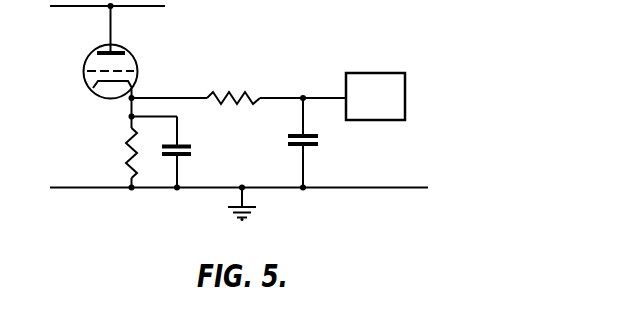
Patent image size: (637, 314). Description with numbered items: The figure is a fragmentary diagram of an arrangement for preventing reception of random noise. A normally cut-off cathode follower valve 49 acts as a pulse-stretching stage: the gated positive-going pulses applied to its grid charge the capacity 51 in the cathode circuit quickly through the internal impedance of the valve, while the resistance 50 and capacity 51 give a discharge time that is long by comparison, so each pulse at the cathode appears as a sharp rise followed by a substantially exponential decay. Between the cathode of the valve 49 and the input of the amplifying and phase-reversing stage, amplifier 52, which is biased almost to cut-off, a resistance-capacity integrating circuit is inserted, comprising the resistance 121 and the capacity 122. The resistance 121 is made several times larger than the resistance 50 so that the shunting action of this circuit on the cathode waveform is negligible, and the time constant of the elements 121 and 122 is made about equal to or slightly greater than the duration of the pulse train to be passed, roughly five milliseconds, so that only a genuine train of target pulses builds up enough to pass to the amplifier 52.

The cathode follower valve 49 is at (129, 53).
The resistance 50 is at (126, 140).
The capacity 51 is at (191, 148).
The resistance 121 is at (257, 94).
The capacity 122 is at (318, 146).
The amplifier 52 is at (406, 88).